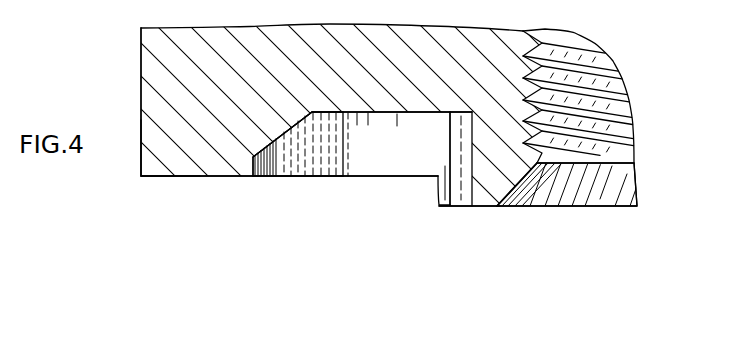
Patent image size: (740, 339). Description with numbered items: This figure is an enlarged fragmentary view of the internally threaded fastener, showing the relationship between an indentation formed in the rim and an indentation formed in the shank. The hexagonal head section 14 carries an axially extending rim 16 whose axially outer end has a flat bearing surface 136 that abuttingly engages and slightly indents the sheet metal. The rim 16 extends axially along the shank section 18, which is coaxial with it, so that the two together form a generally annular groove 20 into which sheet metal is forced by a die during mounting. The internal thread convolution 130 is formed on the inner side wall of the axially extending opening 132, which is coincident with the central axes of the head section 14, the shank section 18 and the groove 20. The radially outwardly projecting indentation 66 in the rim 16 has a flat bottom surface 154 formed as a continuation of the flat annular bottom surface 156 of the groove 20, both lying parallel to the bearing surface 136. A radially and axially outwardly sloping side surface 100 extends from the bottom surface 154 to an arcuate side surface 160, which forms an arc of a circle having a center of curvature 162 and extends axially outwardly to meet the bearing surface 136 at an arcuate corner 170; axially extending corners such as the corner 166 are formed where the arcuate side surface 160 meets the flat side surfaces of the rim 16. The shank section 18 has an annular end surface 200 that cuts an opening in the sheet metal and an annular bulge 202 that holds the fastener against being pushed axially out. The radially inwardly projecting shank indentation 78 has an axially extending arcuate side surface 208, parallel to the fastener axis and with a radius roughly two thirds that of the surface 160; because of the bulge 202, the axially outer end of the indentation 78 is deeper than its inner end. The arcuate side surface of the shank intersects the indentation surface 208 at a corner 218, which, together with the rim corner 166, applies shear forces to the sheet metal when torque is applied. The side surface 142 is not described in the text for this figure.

The head section 14 is at (133, 76).
The side face of body 142 is at (141, 150).
The rim 16 is at (132, 197).
The bearing surface 136 is at (171, 177).
The sloping side surface 100 is at (306, 111).
The arcuate corner 170 is at (252, 177).
The arcuate side surface 160 is at (293, 157).
The flat bottom surface 154 is at (334, 112).
The bottom surface of the groove 156 is at (432, 112).
The axially extending corner 166 is at (347, 150).
The indentation 66 is at (315, 185).
The annular groove 20 is at (404, 186).
The annular bulge 202 is at (447, 190).
The corner 218 is at (450, 153).
The center of curvature 162 is at (446, 228).
The shank indentation 78 is at (458, 212).
The annular end surface 200 is at (476, 209).
The shank section 18 is at (489, 217).
The arcuate side surface 208 is at (501, 198).
The internal thread convolution 130 is at (525, 42).
The opening 132 is at (614, 125).